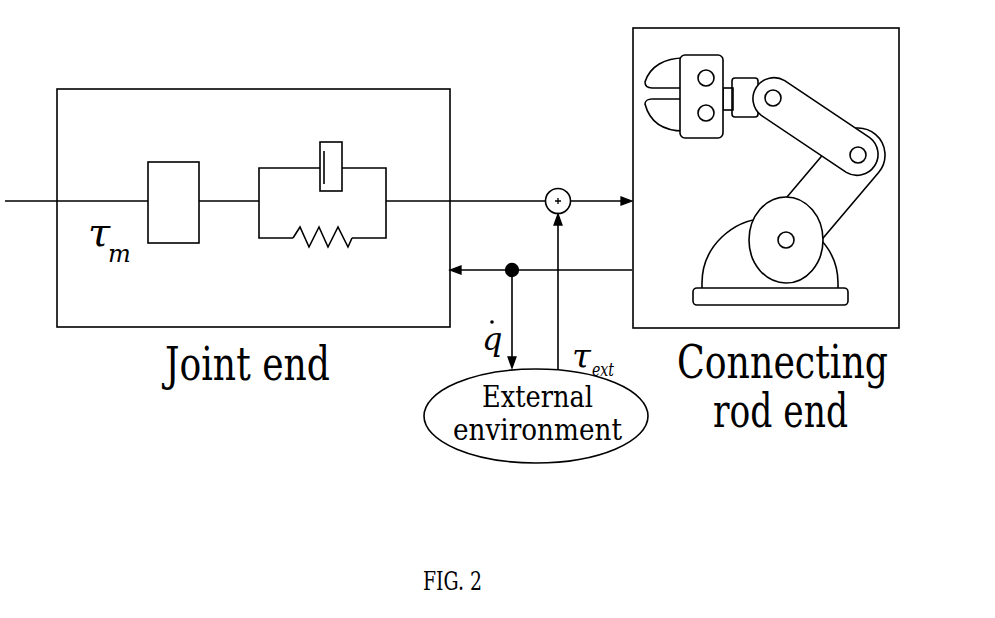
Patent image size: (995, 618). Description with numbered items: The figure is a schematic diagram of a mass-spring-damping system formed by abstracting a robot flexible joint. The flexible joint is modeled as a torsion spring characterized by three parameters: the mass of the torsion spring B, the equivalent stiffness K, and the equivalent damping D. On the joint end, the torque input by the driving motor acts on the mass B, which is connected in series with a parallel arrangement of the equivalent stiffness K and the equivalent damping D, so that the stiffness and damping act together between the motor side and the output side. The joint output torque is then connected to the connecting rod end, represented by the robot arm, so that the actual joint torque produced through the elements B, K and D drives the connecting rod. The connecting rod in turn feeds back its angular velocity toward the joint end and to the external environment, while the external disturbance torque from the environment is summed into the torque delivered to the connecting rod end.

The mass of the torsion spring B is at (177, 234).
The equivalent stiffness K is at (332, 266).
The equivalent damping D is at (357, 156).